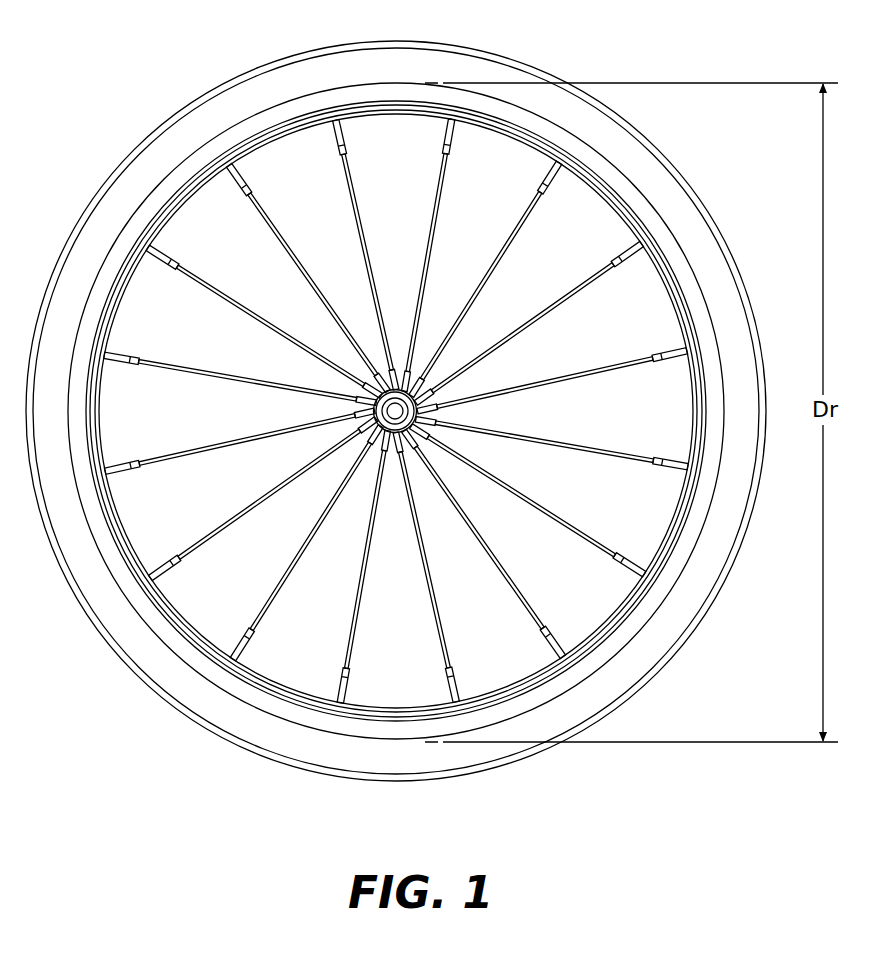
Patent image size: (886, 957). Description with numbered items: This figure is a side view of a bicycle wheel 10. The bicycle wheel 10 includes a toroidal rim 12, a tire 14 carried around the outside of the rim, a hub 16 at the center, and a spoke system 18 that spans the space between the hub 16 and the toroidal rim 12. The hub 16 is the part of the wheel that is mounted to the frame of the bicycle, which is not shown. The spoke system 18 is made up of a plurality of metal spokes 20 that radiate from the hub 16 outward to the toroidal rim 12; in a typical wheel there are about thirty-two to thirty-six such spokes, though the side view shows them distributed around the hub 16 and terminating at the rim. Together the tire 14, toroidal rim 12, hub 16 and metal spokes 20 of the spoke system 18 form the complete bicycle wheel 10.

The bicycle wheel 10 is at (406, 395).
The toroidal rim 12 is at (421, 93).
The tire 14 is at (158, 85).
The hub 16 is at (440, 412).
The spoke system 18 is at (650, 485).
The metal spokes 20 is at (612, 567).